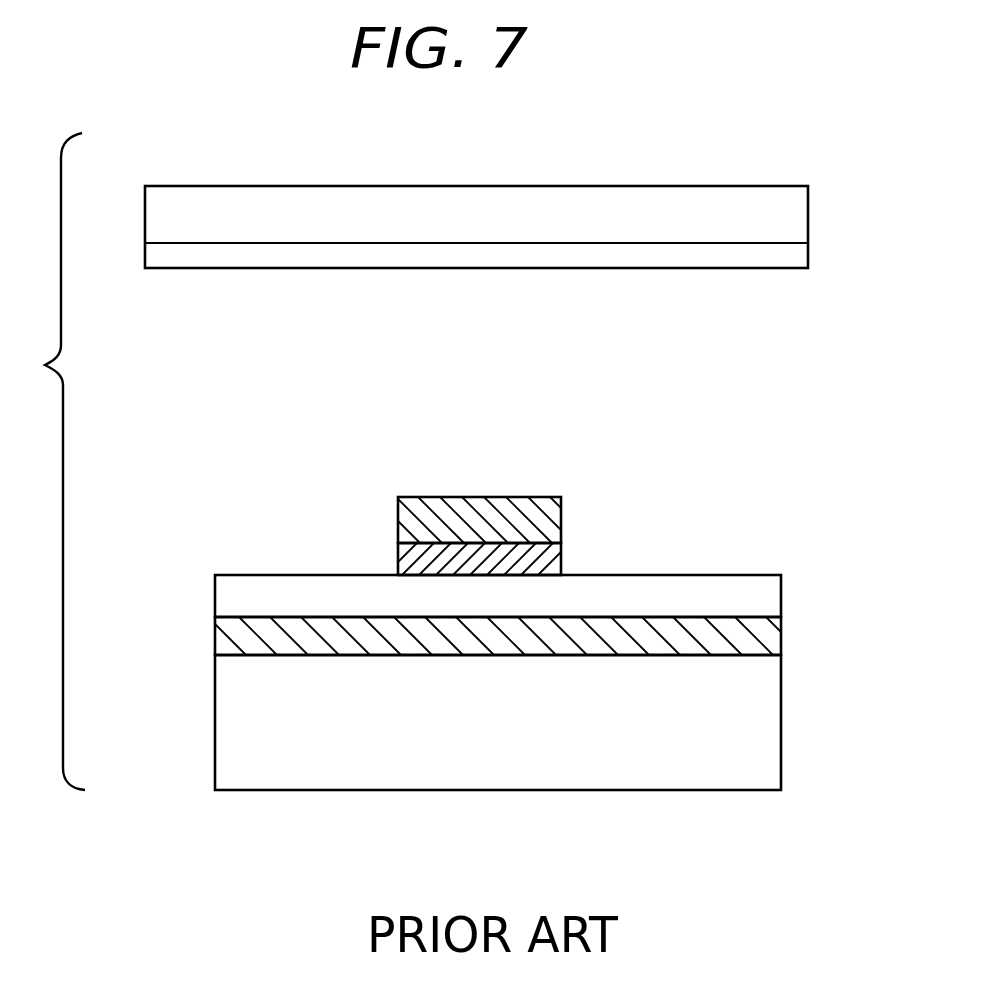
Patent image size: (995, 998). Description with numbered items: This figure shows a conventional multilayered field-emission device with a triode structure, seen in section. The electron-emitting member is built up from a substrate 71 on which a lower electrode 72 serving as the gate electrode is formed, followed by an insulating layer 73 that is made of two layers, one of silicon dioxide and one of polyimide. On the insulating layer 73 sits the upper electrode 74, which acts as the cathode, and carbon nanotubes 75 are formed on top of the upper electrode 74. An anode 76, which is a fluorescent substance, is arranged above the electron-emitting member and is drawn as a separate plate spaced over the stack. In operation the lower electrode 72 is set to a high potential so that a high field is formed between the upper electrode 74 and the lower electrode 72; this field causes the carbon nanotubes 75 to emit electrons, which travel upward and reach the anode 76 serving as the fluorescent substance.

The substrate 71 is at (763, 685).
The lower electrode 72 is at (762, 633).
The insulating layer 73 is at (762, 597).
The upper electrode 74 is at (560, 553).
The carbon nanotubes 75 is at (515, 502).
The anode 76 is at (222, 258).